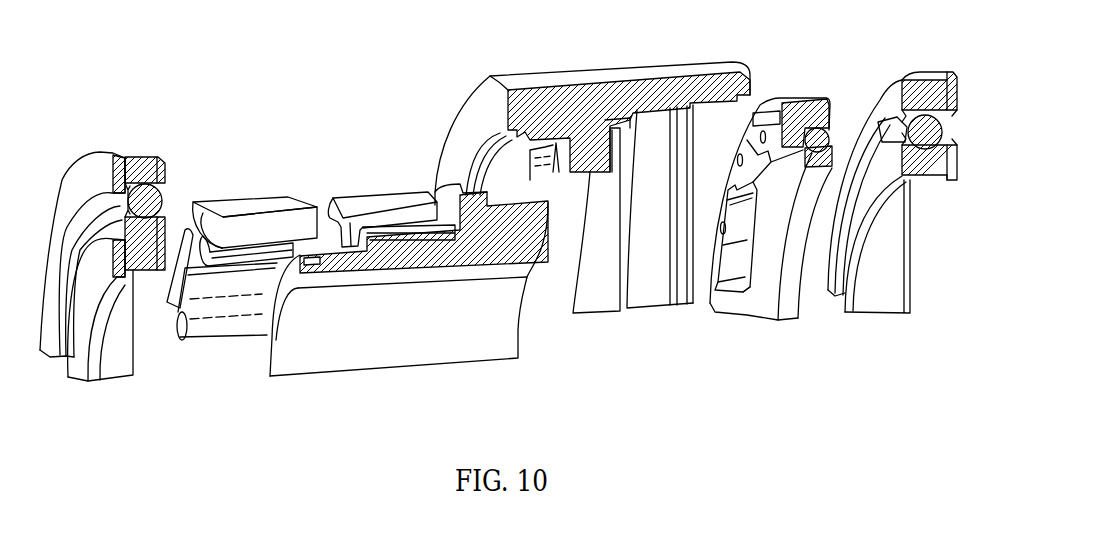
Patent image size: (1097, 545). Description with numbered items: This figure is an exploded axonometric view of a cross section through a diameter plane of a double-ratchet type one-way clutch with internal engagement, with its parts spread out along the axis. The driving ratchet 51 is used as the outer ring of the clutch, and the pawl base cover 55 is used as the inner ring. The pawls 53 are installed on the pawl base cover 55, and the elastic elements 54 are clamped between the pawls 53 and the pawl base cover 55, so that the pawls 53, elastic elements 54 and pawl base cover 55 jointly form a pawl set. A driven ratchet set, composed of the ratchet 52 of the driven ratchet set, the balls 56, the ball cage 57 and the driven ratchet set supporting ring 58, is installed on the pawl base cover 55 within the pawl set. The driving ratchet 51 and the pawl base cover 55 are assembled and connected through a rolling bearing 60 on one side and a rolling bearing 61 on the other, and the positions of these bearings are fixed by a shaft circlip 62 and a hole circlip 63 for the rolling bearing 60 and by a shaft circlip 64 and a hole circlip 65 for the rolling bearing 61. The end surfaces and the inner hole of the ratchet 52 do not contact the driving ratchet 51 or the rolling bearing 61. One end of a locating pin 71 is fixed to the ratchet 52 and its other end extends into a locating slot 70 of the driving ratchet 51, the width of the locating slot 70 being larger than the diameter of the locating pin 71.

The driving ratchet 51 is at (472, 130).
The ratchet of the driven ratchet set 52 is at (723, 247).
The pawl 53 is at (260, 228).
The elastic element 54 is at (218, 253).
The pawl base cover 55 is at (273, 333).
The ball 56 is at (815, 168).
The ball cage 57 is at (835, 137).
The driven ratchet set supporting ring 58 is at (772, 268).
The rolling bearing 60 is at (148, 160).
The rolling bearing 61 is at (878, 280).
The shaft circlip 62 is at (95, 265).
The hole circlip 63 is at (94, 173).
The shaft circlip 64 is at (905, 277).
The hole circlip 65 is at (945, 73).
The locating slot 70 is at (617, 133).
The locating pin 71 is at (760, 118).